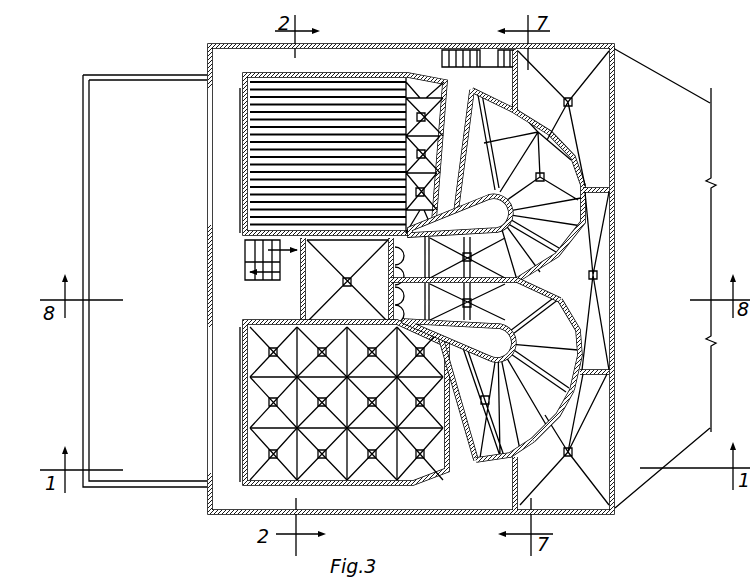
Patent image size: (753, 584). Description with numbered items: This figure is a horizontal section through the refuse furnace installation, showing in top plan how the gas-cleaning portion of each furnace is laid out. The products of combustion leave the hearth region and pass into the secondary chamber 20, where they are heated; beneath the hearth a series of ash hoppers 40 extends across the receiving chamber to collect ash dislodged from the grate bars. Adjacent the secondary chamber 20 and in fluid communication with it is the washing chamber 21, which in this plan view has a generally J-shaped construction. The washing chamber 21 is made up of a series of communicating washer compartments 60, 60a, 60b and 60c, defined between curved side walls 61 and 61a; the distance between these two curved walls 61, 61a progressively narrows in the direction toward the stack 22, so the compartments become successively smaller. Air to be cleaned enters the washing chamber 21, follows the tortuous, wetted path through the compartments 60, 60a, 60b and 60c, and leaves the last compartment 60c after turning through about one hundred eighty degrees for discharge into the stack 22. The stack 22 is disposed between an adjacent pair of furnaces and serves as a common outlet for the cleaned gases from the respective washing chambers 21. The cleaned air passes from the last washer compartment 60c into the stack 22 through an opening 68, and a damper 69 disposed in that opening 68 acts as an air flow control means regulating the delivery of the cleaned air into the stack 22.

The secondary chamber 20 is at (457, 476).
The washing chamber 21 is at (573, 148).
The stack 22 is at (298, 305).
The ash hopper 40 is at (248, 402).
The washer compartment 60 is at (493, 447).
The washer compartment 60a is at (553, 402).
The washer compartment 60b is at (567, 323).
The washer compartment 60c is at (490, 307).
The curved side wall 61 is at (483, 347).
The curved side wall 61a is at (533, 442).
The opening 68 is at (392, 313).
The damper 69 is at (382, 257).